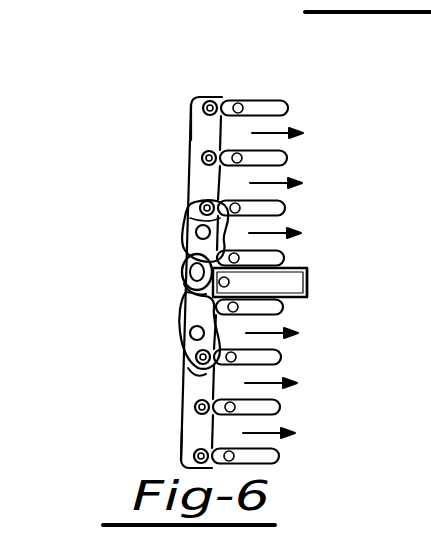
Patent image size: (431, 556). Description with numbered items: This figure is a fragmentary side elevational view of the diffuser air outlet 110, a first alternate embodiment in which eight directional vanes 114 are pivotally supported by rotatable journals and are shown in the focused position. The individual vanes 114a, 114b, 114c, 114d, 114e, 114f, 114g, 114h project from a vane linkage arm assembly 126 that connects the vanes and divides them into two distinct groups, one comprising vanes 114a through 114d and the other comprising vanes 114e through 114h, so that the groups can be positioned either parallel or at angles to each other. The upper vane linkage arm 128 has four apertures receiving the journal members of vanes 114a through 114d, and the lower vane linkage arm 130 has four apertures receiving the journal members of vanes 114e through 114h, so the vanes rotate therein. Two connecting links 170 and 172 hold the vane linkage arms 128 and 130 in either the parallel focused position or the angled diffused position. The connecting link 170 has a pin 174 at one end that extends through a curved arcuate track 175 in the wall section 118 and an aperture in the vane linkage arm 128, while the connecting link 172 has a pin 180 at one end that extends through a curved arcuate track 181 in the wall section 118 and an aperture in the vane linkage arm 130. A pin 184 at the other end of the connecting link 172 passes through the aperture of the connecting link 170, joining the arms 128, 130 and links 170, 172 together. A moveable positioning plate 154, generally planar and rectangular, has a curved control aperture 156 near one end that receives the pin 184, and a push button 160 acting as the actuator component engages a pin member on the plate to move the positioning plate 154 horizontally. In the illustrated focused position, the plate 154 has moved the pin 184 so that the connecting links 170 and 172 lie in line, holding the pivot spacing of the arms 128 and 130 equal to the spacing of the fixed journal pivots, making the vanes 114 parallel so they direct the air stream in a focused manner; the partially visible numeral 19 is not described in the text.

The diffuser air outlet 110 is at (313, 113).
The directional vanes 114 is at (250, 97).
The directional vane 114a is at (232, 97).
The directional vane 114b is at (290, 158).
The directional vane 114c is at (288, 207).
The directional vane 114d is at (287, 257).
The directional vane 114e is at (290, 308).
The directional vane 114f is at (285, 357).
The directional vane 114g is at (284, 406).
The directional vane 114h is at (283, 455).
The wall section 118 is at (187, 355).
The vane linkage arm assembly 126 is at (187, 181).
The vane linkage arm 128 is at (207, 132).
The vane linkage arm 130 is at (178, 400).
The positioning plate 154 is at (185, 308).
The control aperture 156 is at (190, 265).
The push button 160 is at (309, 285).
The connecting link 170 is at (186, 238).
The connecting link 172 is at (185, 318).
The pin 174 is at (182, 228).
The arcuate track 175 is at (193, 205).
The pin 180 is at (183, 337).
The arcuate track 181 is at (187, 378).
The pin 184 is at (190, 285).
The actuator end 19 is at (308, 273).